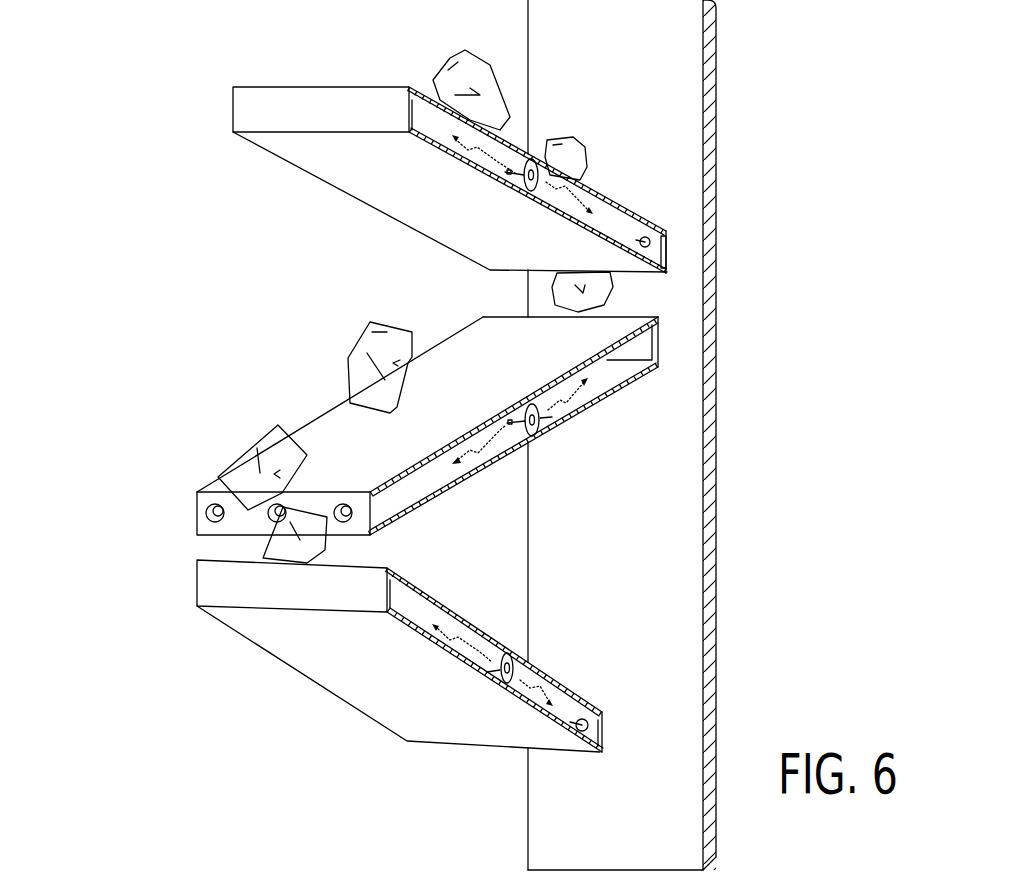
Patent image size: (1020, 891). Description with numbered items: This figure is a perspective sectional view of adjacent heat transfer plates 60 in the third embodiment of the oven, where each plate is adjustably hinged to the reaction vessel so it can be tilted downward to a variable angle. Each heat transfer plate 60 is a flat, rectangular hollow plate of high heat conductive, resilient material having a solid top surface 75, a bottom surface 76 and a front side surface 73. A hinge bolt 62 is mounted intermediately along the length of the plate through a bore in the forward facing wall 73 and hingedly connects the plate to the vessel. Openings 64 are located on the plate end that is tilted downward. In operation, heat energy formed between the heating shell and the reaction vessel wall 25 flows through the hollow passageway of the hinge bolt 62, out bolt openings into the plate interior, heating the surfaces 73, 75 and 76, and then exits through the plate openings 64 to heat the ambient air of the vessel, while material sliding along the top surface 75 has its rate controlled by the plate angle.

The reaction vessel wall 25 is at (708, 66).
The heat transfer plate 60 is at (192, 574).
The hinge bolt 62 is at (548, 418).
The openings 64 is at (212, 502).
The front side surface 73 is at (418, 112).
The top surface 75 is at (337, 413).
The bottom surface 76 is at (317, 152).